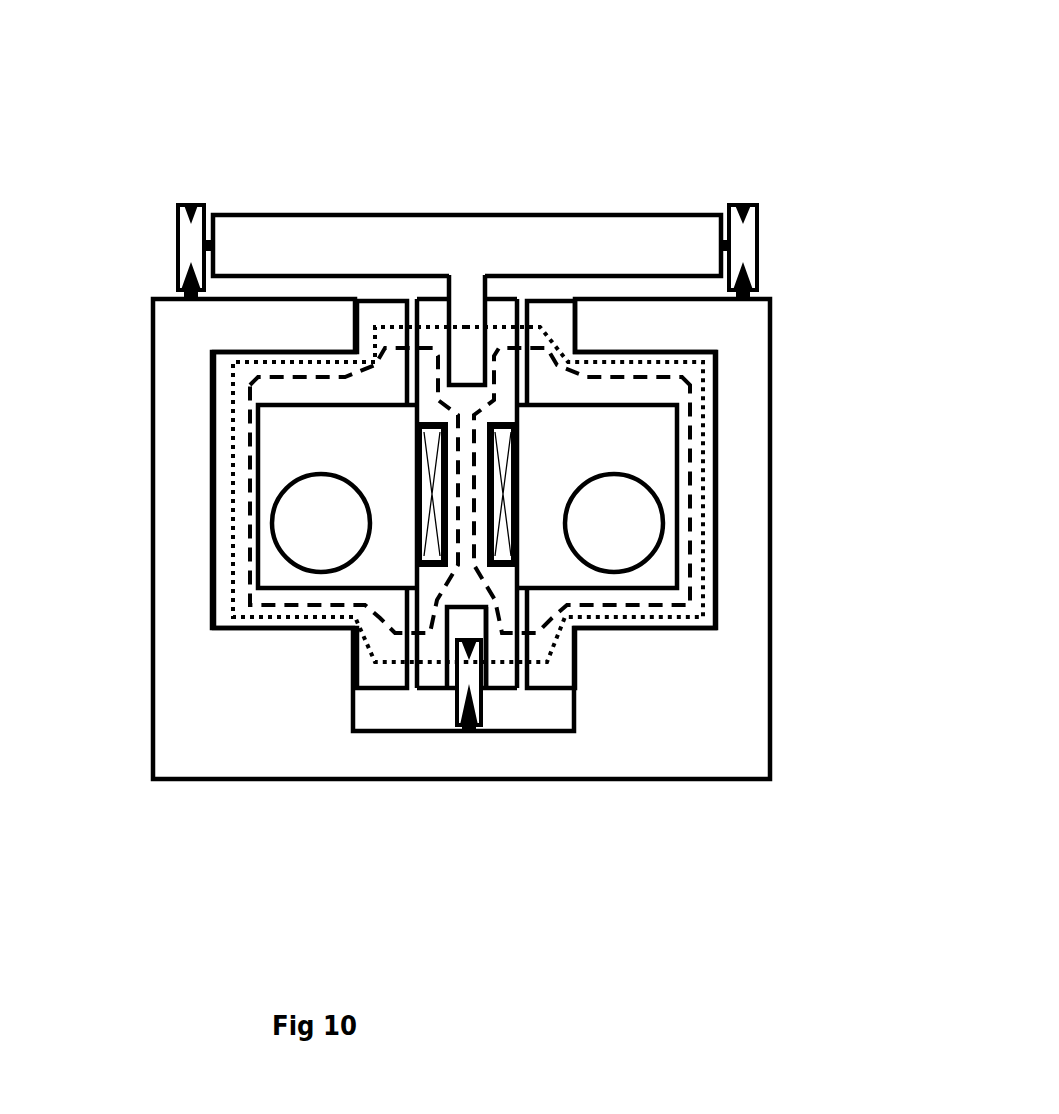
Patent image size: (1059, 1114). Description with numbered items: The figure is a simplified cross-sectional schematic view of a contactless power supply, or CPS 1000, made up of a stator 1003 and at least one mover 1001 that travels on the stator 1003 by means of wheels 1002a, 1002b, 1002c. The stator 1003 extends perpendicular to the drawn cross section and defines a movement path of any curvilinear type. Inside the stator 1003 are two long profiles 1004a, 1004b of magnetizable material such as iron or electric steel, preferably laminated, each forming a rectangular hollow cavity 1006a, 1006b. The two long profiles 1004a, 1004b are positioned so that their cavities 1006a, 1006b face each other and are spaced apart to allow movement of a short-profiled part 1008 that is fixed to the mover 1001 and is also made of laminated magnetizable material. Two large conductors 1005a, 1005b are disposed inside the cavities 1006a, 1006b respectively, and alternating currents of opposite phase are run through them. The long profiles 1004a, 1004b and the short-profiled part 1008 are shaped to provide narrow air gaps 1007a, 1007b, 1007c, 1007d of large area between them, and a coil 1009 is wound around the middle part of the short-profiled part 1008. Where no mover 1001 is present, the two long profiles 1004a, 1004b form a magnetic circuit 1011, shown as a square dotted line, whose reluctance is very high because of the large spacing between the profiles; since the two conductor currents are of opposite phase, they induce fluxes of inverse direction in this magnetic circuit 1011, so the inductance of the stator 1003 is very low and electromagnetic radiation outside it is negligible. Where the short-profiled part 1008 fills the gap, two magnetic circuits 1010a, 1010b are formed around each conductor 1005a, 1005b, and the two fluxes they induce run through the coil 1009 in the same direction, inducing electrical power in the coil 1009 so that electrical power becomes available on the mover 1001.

The CPS 1000 is at (660, 100).
The mover 1001 is at (290, 235).
The wheel 1002a is at (180, 243).
The wheel 1002b is at (760, 232).
The wheel 1002c is at (469, 736).
The stator 1003 is at (735, 673).
The long profile 1004a is at (292, 628).
The long profile 1004b is at (640, 628).
The large conductor 1005a is at (292, 540).
The large conductor 1005b is at (648, 540).
The rectangular hollow cavity 1006a is at (285, 425).
The rectangular hollow cavity 1006b is at (645, 423).
The narrow air gap 1007a is at (410, 300).
The narrow air gap 1007b is at (520, 300).
The narrow air gap 1007c is at (410, 688).
The narrow air gap 1007d is at (520, 688).
The short-profiled part 1008 is at (425, 410).
The coil 1009 is at (415, 447).
The magnetic circuit 1010a is at (235, 521).
The magnetic circuit 1010b is at (697, 490).
The magnetic circuit 1011 is at (703, 440).